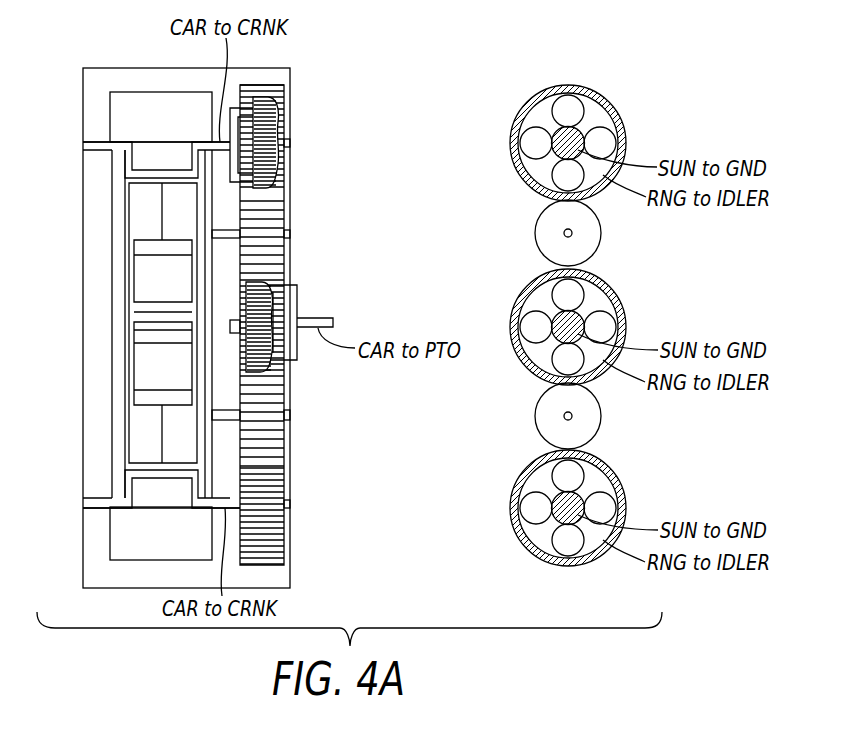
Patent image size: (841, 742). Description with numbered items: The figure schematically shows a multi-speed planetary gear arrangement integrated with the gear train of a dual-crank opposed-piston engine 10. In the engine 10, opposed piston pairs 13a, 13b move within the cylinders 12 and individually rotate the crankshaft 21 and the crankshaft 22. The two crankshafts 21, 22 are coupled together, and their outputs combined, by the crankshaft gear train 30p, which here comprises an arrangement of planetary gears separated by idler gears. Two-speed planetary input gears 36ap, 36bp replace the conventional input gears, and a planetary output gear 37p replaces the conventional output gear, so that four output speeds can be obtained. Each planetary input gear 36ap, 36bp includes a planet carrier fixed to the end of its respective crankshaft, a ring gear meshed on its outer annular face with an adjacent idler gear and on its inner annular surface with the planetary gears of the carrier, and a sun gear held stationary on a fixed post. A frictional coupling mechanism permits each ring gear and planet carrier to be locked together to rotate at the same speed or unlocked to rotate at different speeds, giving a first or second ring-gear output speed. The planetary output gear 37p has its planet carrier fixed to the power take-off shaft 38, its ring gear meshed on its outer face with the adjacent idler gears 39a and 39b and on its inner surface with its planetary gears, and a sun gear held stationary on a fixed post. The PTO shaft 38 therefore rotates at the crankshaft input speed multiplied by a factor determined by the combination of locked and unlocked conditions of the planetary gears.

The engine 10 is at (122, 67).
The crankshaft 21 is at (100, 142).
The crankshaft 22 is at (100, 505).
The cylinder 12 is at (127, 227).
The piston 13a is at (145, 280).
The piston 13b is at (145, 360).
The crankshaft gear train 30p is at (290, 585).
The planetary input gear 36ap is at (278, 97).
The idler gear 39a is at (275, 225).
The power take-off shaft 38 is at (312, 318).
The planetary output gear 37p is at (285, 378).
The idler gear 39b is at (275, 433).
The planetary input gear 36bp is at (282, 537).